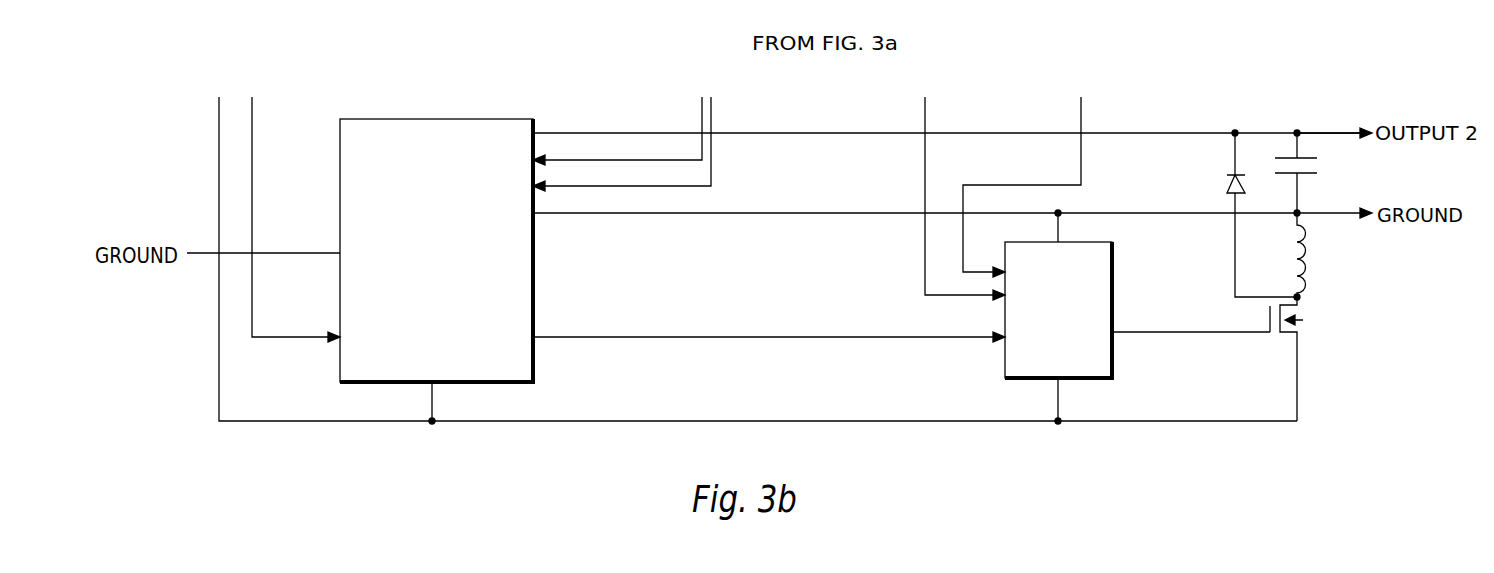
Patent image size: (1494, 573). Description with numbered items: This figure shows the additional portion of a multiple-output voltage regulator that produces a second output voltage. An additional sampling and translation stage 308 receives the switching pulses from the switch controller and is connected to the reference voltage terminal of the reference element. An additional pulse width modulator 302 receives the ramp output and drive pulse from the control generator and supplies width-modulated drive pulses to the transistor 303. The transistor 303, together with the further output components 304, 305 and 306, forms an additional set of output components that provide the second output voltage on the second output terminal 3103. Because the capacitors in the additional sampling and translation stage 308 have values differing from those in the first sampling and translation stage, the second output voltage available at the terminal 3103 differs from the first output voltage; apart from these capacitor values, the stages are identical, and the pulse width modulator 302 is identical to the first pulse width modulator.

The additional sampling and translation stage 308 is at (458, 280).
The additional pulse width modulator 302 is at (1085, 322).
The output component 305 is at (1222, 183).
The output component 306 is at (1320, 167).
The output component 304 is at (1308, 250).
The transistor 303 is at (1300, 331).
The second output terminal 3103 is at (1318, 131).